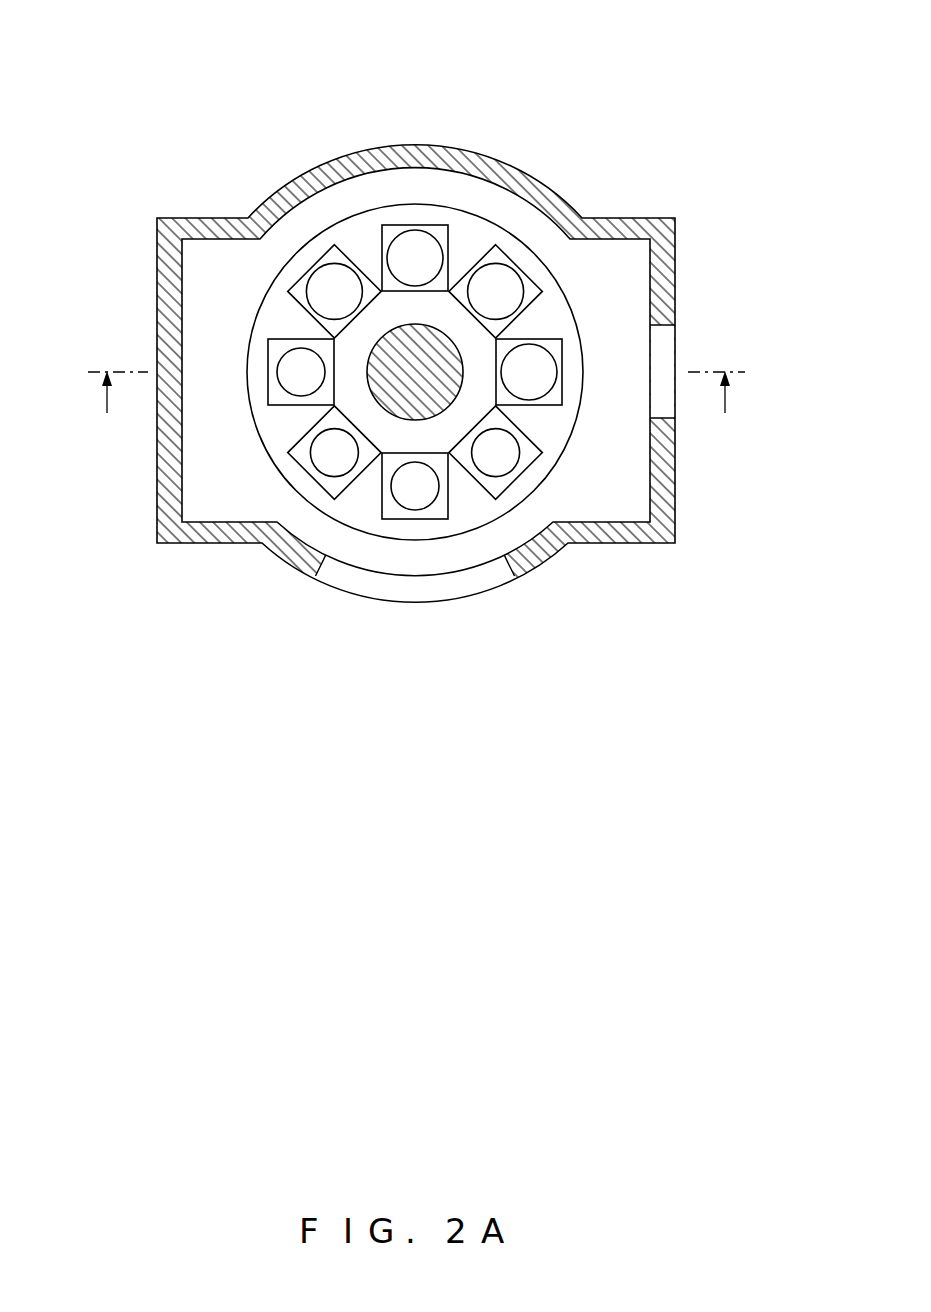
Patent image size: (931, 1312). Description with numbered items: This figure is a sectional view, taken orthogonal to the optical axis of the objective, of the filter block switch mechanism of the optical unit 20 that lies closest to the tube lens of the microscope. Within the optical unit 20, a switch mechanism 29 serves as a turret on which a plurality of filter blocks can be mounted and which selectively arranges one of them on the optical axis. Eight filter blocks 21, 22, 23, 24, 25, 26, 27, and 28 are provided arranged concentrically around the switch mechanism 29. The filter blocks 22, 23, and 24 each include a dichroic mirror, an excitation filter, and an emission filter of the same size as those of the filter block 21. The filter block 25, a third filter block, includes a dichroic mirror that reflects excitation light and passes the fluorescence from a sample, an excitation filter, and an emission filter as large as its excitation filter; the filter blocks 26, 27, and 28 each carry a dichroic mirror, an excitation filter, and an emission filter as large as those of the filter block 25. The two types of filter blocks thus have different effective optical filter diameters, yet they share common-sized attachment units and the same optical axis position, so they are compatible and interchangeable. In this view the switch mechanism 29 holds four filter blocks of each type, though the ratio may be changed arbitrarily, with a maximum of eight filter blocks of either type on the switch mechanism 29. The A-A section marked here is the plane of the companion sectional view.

The optical unit 20 is at (752, 56).
The filter block 21 is at (522, 339).
The filter block 22 is at (497, 258).
The filter block 23 is at (410, 224).
The filter block 24 is at (334, 258).
The filter block 25 is at (305, 339).
The filter block 26 is at (335, 478).
The filter block 27 is at (416, 510).
The filter block 28 is at (513, 480).
The switch mechanism 29 is at (572, 436).